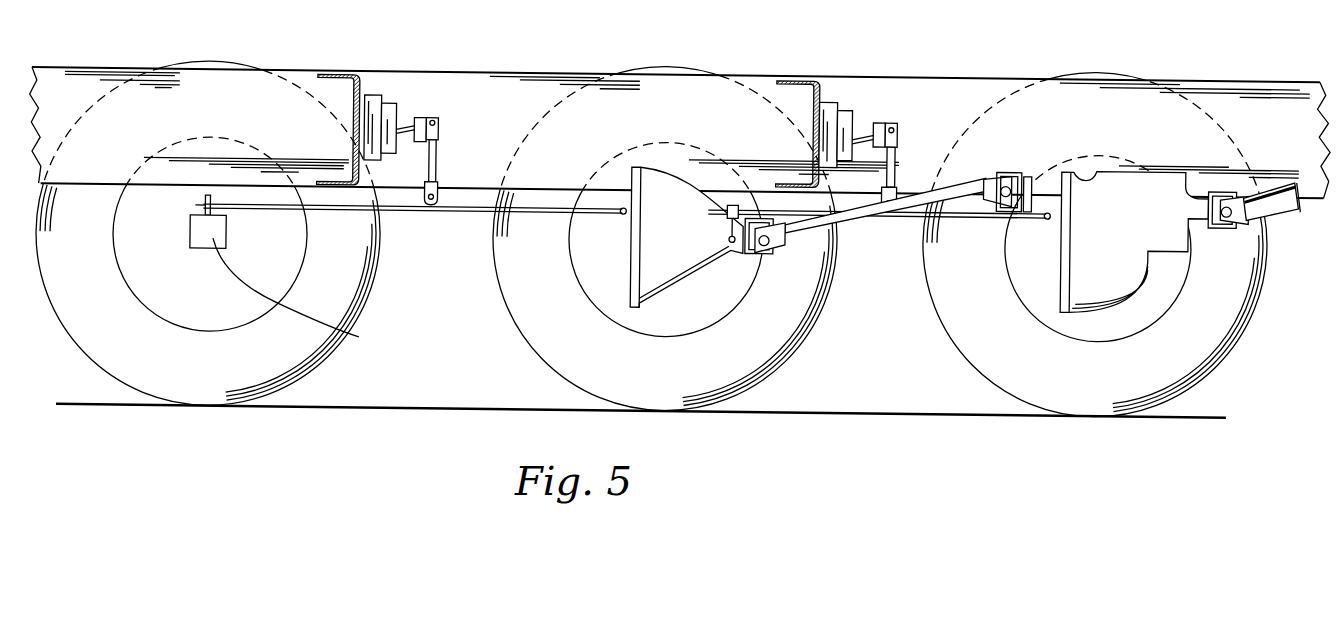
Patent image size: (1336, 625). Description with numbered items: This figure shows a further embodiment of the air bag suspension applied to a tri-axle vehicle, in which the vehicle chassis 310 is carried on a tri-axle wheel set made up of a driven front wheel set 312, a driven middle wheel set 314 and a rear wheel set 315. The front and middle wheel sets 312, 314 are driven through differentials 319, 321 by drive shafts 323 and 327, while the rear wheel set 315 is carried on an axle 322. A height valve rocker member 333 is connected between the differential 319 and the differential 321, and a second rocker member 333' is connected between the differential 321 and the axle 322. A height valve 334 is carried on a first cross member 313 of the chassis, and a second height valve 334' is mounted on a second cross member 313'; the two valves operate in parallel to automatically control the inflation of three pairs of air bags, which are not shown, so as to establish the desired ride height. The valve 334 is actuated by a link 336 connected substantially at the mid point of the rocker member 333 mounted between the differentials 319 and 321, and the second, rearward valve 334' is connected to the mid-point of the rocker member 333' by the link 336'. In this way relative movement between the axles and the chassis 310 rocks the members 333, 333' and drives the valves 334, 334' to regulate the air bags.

The vehicle chassis 310 is at (951, 67).
The front wheel set 312 is at (1115, 373).
The middle wheel set 314 is at (679, 376).
The rear wheel set 315 is at (223, 370).
The first cross member 313 is at (817, 107).
The second cross member 313' is at (360, 99).
The differential 319 is at (1103, 232).
The differential 321 is at (672, 240).
The axle 322 is at (306, 283).
The drive shaft 323 is at (1276, 200).
The drive shaft 327 is at (790, 248).
The height valve rocker member 333 is at (879, 226).
The second rocker member 333' is at (411, 238).
The height valve 334 is at (861, 97).
The second height valve 334' is at (407, 93).
The link 336 is at (896, 159).
The link 336' is at (441, 152).